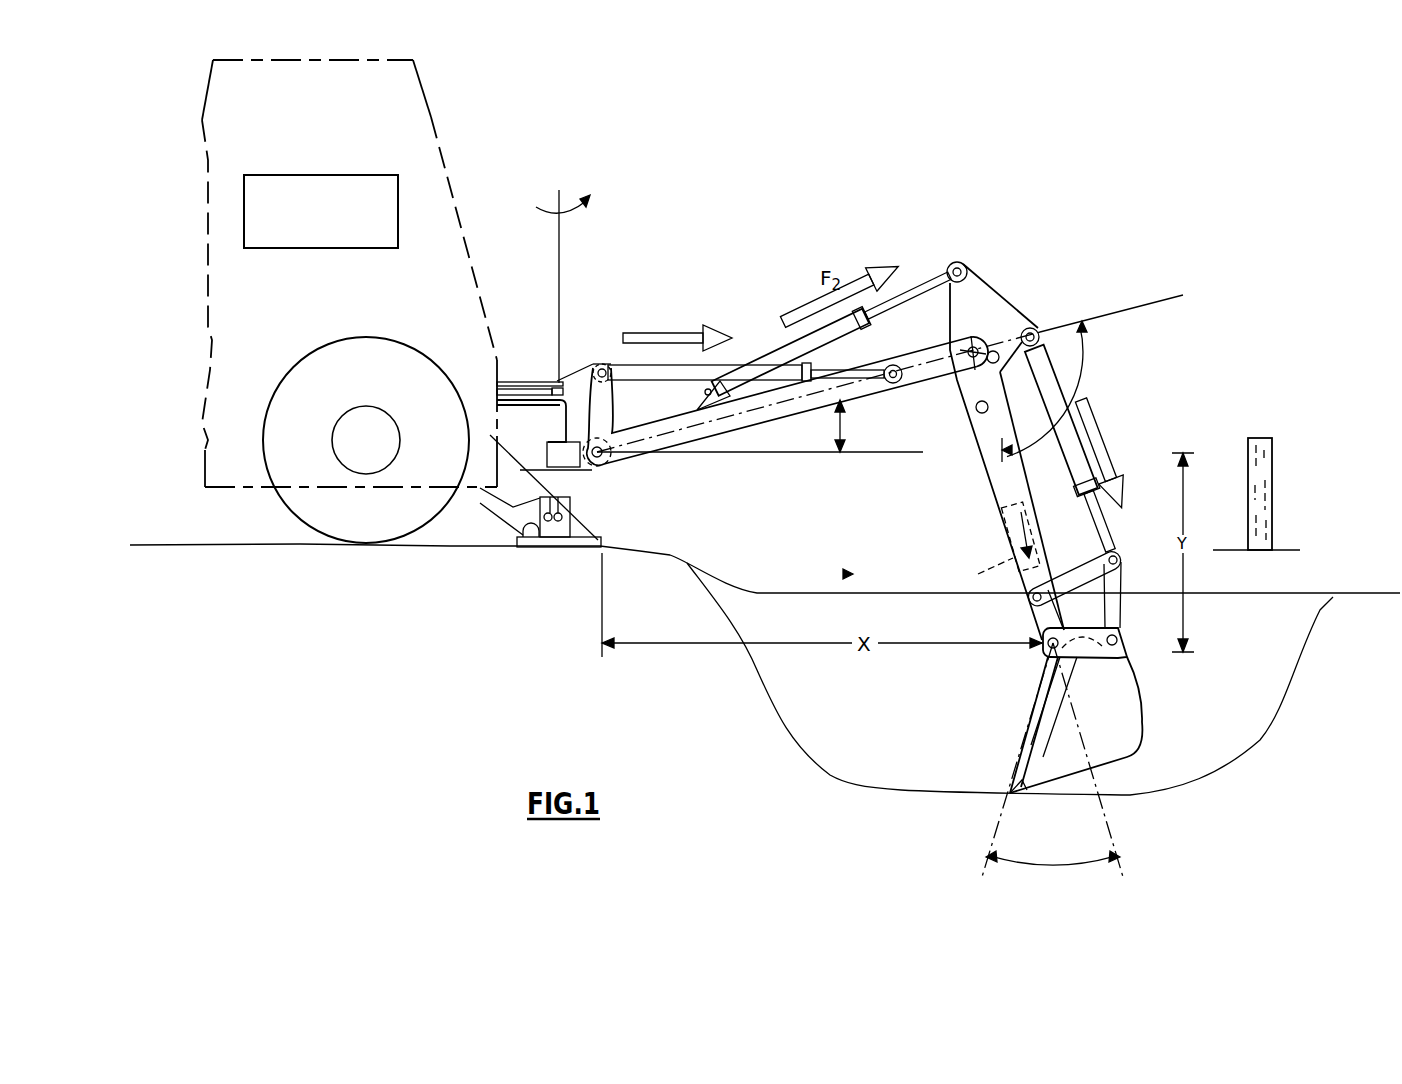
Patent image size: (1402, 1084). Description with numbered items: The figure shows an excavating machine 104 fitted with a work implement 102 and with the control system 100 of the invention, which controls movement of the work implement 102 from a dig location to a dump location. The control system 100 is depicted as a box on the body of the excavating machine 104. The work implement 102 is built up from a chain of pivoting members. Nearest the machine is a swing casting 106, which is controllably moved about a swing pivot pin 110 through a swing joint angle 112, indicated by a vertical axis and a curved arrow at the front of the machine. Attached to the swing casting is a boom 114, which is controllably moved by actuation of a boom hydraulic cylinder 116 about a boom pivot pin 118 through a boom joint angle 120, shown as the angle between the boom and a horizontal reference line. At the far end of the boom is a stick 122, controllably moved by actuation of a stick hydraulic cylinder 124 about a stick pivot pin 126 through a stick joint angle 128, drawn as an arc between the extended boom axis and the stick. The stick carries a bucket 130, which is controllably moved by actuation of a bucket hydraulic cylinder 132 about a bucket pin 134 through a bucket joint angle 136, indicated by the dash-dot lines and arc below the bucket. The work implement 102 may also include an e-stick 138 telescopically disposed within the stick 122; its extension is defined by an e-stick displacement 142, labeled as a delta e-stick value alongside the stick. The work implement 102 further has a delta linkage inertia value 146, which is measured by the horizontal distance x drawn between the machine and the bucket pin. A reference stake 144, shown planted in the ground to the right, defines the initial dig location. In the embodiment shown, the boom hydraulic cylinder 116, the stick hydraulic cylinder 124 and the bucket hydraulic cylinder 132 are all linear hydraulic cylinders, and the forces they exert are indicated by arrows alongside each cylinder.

The control system 100 is at (332, 168).
The work implement 102 is at (1018, 242).
The excavating machine 104 is at (438, 110).
The swing casting 106 is at (595, 348).
The swing pivot pin 110 is at (548, 378).
The swing joint angle 112 is at (588, 134).
The boom 114 is at (686, 444).
The boom hydraulic cylinder 116 is at (673, 364).
The boom pivot pin 118 is at (600, 470).
The boom joint angle 120 is at (807, 494).
The stick 122 is at (982, 460).
The stick hydraulic cylinder 124 is at (820, 321).
The stick pivot pin 126 is at (980, 340).
The stick joint angle 128 is at (1145, 344).
The bucket 130 is at (1128, 732).
The bucket hydraulic cylinder 132 is at (1112, 452).
The bucket pin 134 is at (1030, 660).
The bucket joint angle 136 is at (1137, 864).
The e-stick 138 is at (1037, 508).
The e-stick displacement 142 is at (843, 575).
The reference stake 144 is at (1272, 458).
The delta linkage inertia value 146 is at (836, 692).